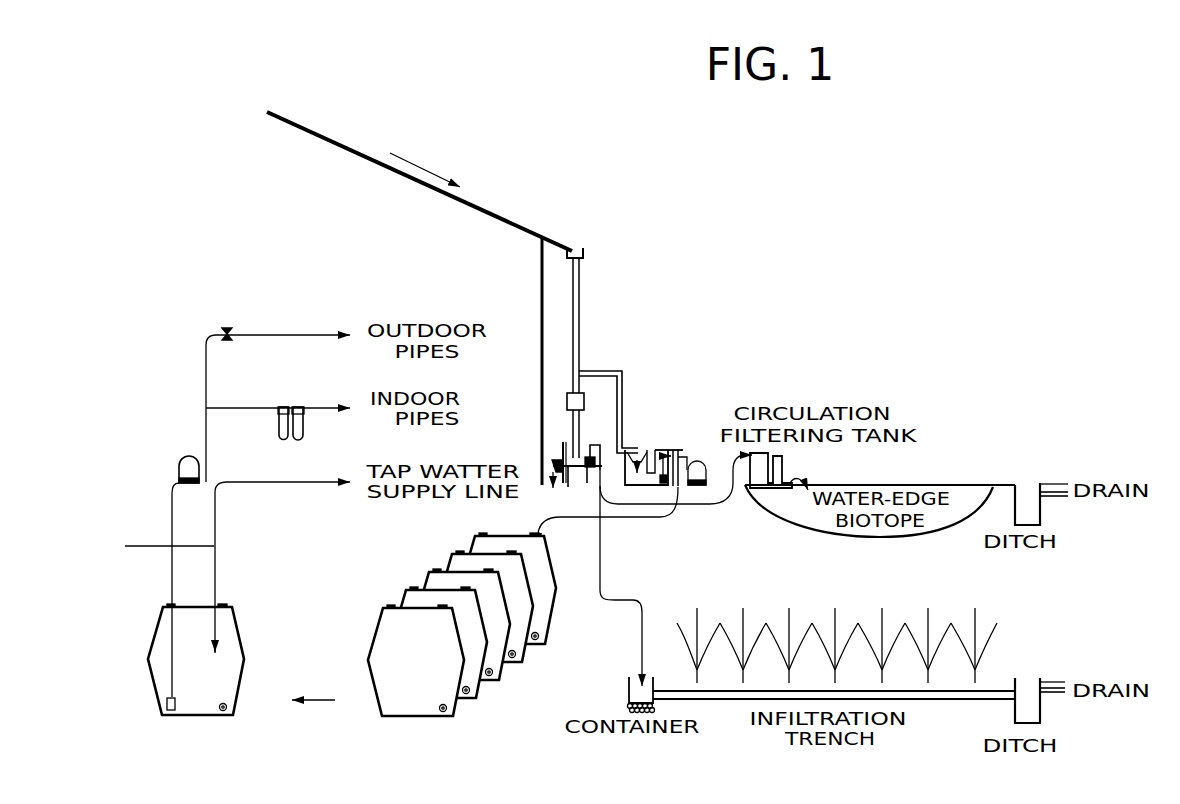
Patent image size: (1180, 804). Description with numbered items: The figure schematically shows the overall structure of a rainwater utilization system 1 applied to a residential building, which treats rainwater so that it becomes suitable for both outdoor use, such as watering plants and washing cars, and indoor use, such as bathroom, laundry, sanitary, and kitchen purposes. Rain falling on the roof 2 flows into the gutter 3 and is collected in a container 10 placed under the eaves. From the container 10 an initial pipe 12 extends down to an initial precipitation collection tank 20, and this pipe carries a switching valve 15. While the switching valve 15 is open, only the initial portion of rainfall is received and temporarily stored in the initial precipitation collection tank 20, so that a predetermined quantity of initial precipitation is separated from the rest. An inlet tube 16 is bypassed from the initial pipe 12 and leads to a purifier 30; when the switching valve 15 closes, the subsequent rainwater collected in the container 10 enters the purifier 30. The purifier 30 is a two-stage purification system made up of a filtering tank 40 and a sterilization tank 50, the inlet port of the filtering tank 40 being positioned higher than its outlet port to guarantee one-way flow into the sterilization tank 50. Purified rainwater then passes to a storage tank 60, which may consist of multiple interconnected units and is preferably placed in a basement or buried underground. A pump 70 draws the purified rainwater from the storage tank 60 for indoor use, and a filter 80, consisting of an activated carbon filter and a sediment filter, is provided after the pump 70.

The rainwater utilization system 1 is at (634, 137).
The roof 2 is at (343, 140).
The gutter 3 is at (578, 248).
The container 10 is at (585, 253).
The initial pipe 12 is at (581, 283).
The switching valve 15 is at (572, 392).
The inlet tube 16 is at (603, 370).
The initial precipitation collection tank 20 is at (562, 443).
The purifier 30 is at (665, 372).
The filtering tank 40 is at (637, 449).
The sterilization tank 50 is at (666, 454).
The storage tank 60 is at (237, 618).
The pump 70 is at (188, 457).
The filter 80 is at (299, 404).